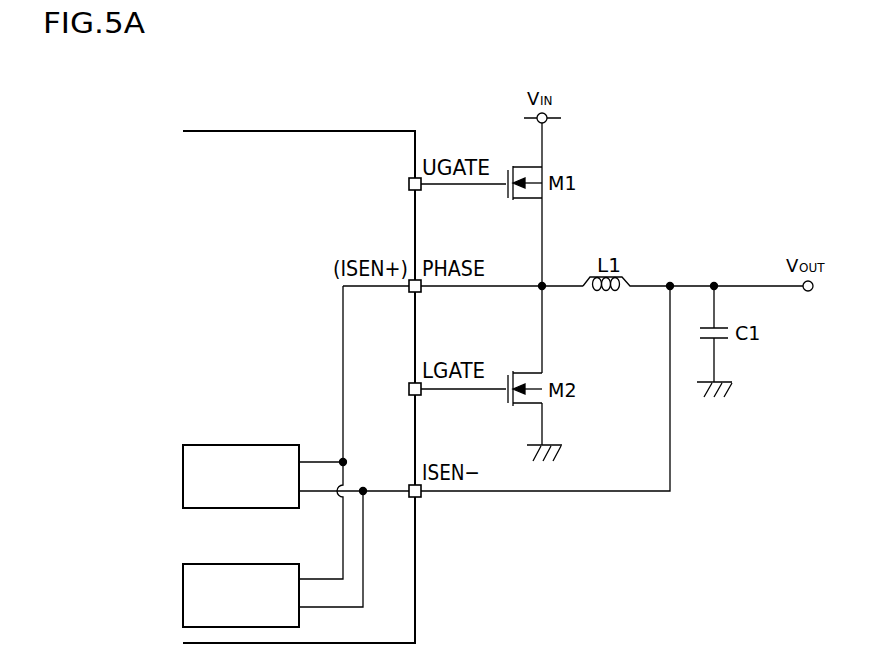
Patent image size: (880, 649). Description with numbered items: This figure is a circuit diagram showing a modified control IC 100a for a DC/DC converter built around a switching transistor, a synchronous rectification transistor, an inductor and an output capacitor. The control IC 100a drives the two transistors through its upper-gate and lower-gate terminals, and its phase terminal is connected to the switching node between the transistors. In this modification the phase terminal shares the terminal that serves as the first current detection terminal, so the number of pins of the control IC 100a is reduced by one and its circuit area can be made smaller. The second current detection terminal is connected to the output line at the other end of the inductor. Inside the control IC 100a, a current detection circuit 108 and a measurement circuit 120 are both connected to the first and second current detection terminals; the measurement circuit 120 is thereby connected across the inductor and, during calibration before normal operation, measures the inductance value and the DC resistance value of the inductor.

The control IC 100a is at (298, 129).
The current detection circuit 108 is at (243, 443).
The measurement circuit 120 is at (243, 562).